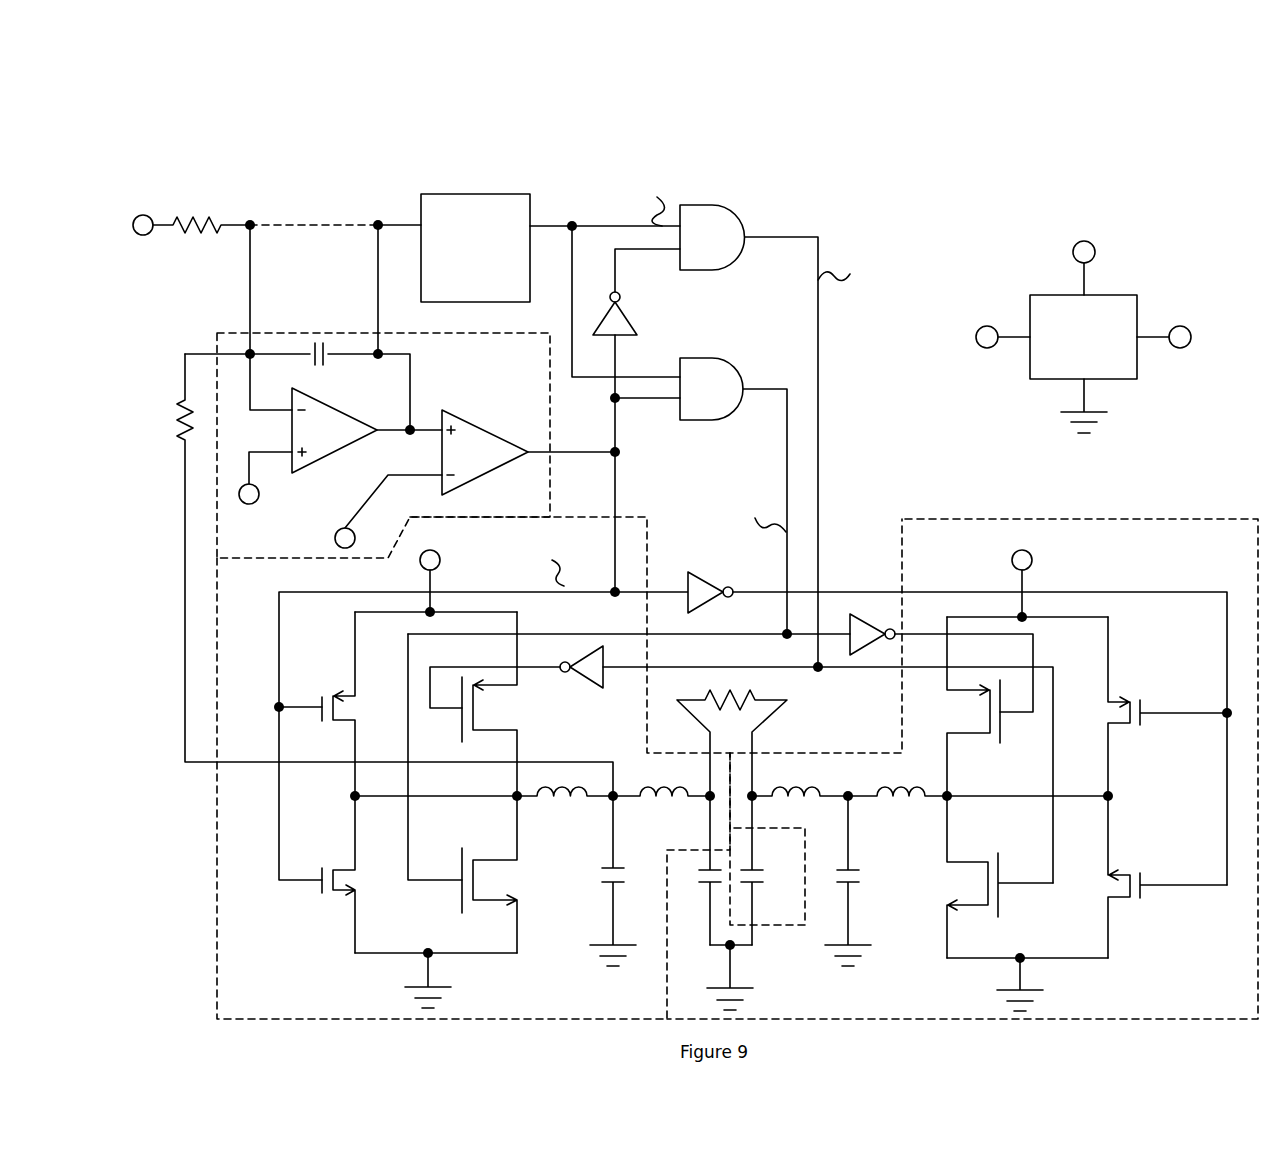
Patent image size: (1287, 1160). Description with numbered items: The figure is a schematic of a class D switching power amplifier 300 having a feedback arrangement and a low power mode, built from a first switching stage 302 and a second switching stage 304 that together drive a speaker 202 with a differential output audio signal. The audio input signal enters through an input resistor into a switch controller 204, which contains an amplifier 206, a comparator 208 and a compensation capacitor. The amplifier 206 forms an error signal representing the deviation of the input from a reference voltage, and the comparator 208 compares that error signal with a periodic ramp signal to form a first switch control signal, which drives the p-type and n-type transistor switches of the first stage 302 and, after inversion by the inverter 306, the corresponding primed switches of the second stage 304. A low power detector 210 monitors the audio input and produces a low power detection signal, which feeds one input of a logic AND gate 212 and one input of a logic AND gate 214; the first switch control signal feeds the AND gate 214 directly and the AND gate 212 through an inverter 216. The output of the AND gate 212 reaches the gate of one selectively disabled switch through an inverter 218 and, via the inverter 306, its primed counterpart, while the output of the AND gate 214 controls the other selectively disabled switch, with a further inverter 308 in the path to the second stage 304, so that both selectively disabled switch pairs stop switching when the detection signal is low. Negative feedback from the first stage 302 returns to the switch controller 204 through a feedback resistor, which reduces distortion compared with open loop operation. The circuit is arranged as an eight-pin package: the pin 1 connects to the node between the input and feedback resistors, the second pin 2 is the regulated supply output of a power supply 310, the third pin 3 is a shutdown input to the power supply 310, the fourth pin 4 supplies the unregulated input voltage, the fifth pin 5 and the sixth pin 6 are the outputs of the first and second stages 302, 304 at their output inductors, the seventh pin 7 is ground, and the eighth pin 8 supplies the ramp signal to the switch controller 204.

The pin 1 is at (254, 222).
The second pin 2 is at (988, 319).
The third pin 3 is at (1180, 325).
The fourth pin 4 is at (1108, 259).
The fifth pin 5 is at (515, 799).
The sixth pin 6 is at (948, 800).
The seventh pin 7 is at (356, 955).
The eighth pin 8 is at (297, 538).
The speaker 202 is at (777, 708).
The switch controller 204 is at (385, 510).
The amplifier 206 is at (290, 444).
The comparator 208 is at (427, 480).
The low power detector 210 is at (532, 216).
The logic AND gate 212 is at (722, 268).
The logic AND gate 214 is at (708, 420).
The inverter 216 is at (627, 318).
The inverter 218 is at (592, 682).
The class D switching power amplifier 300 is at (691, 600).
The first switching stage 302 is at (445, 778).
The second switching stage 304 is at (962, 744).
The inverter 306 is at (881, 625).
The inverter 308 is at (706, 580).
The power supply 310 is at (1084, 328).